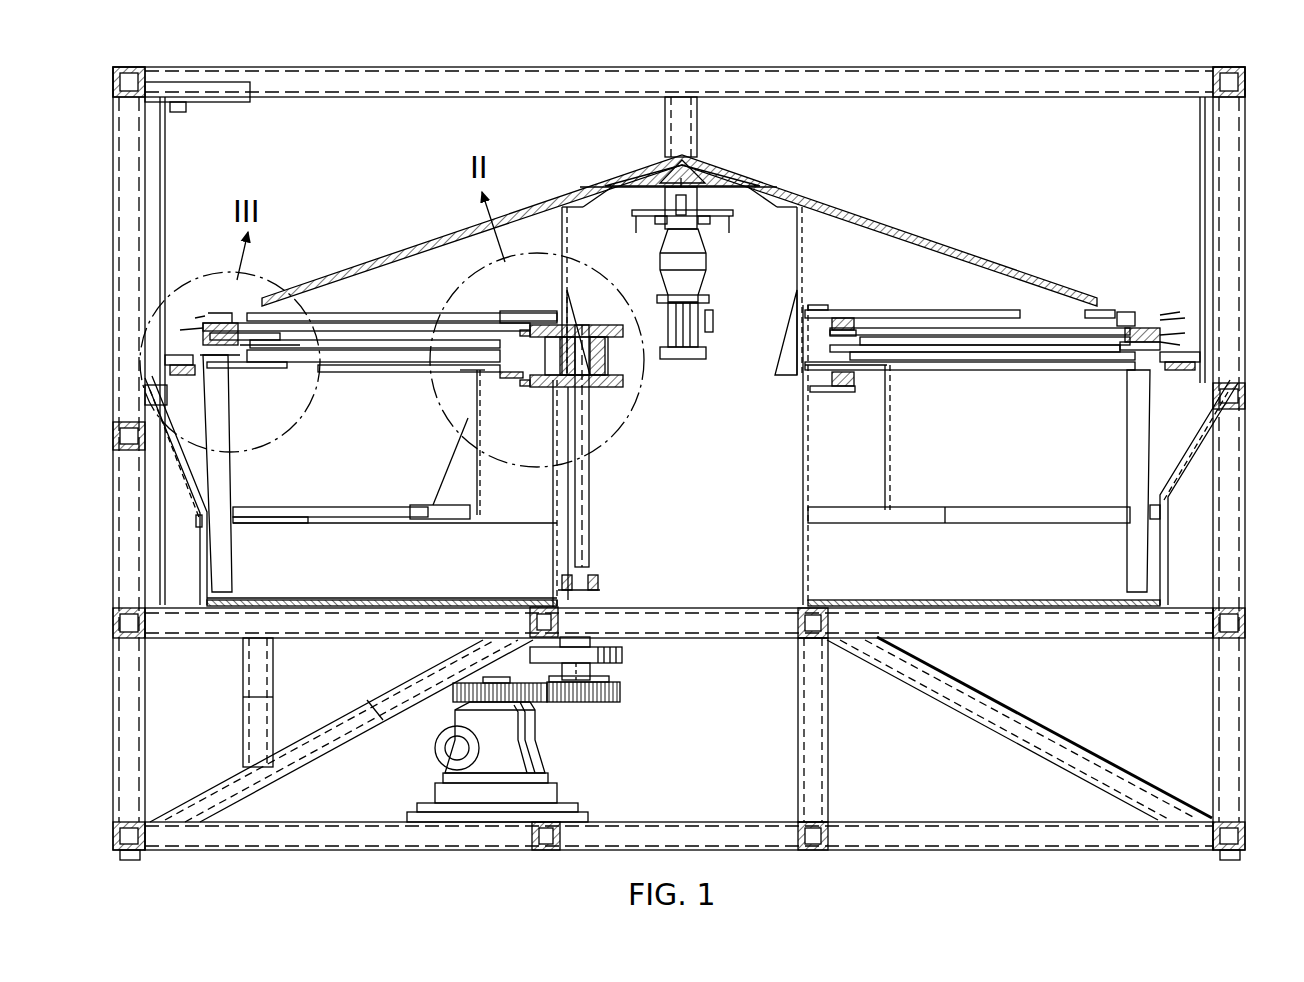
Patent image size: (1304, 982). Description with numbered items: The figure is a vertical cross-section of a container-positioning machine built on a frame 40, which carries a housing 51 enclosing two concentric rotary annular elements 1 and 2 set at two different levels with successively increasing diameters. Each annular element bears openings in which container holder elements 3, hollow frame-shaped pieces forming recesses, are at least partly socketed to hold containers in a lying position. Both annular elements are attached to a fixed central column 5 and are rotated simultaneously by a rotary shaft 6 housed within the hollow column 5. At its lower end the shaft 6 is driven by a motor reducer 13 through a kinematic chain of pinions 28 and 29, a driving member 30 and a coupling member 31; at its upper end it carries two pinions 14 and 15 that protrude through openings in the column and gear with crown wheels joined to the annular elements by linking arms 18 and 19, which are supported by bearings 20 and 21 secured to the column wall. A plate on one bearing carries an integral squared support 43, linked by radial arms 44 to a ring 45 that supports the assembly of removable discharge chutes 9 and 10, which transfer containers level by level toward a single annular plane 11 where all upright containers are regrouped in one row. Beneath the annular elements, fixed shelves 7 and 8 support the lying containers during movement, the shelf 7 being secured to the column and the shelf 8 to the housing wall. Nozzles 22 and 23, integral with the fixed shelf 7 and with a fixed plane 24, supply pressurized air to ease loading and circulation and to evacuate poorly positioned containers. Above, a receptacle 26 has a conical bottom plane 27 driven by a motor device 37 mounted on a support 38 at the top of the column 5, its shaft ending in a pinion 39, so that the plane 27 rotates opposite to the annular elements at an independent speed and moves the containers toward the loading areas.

The rotary annular element 1 is at (200, 315).
The rotary annular element 2 is at (160, 350).
The container holder element 3 is at (1150, 328).
The fixed central column 5 is at (555, 500).
The rotary shaft 6 is at (588, 497).
The fixed shelf 7 is at (1195, 328).
The fixed shelf 8 is at (140, 400).
The discharge chute 9 is at (225, 452).
The discharge chute 10 is at (170, 458).
The single annular plane 11 is at (238, 604).
The motor reducer 13 is at (435, 745).
The pinion 14 is at (600, 325).
The pinion 15 is at (628, 410).
The linking arm 18 is at (350, 313).
The linking arm 19 is at (388, 360).
The bearing 20 is at (840, 322).
The bearing 21 is at (860, 385).
The nozzle 22 is at (1115, 310).
The nozzle 23 is at (1125, 360).
The fixed plane 24 is at (1000, 312).
The receptacle 26 is at (1213, 162).
The bottom plane 27 is at (920, 238).
The pinion 28 is at (455, 685).
The pinion 29 is at (610, 702).
The driving member 30 is at (622, 652).
The coupling member 31 is at (595, 580).
The device 37 is at (710, 262).
The support 38 is at (733, 212).
The pinion 39 is at (700, 175).
The frame 40 is at (1225, 702).
The squared support 43 is at (455, 475).
The radial arm 44 is at (375, 508).
The ring 45 is at (240, 508).
The housing 51 is at (182, 500).